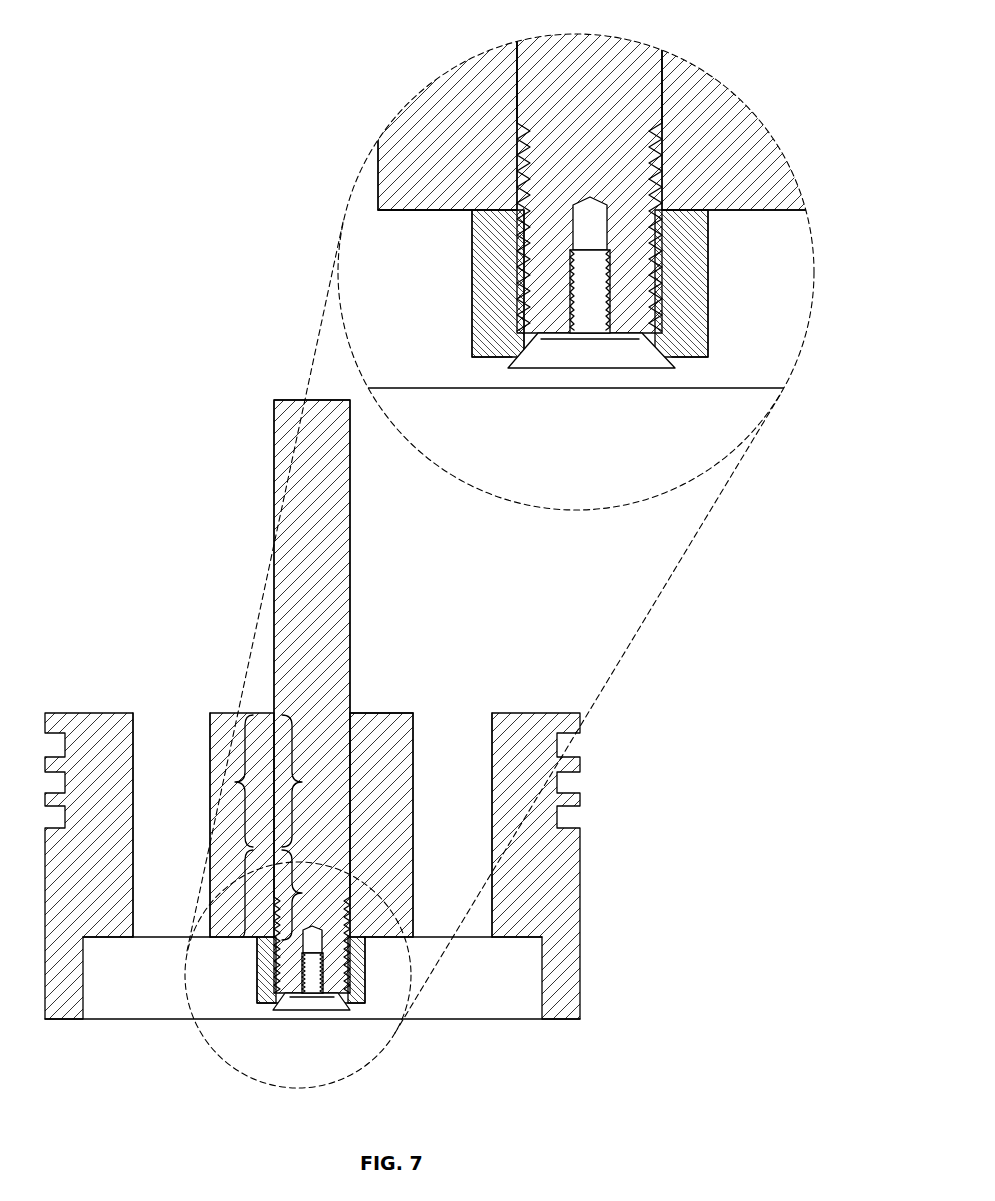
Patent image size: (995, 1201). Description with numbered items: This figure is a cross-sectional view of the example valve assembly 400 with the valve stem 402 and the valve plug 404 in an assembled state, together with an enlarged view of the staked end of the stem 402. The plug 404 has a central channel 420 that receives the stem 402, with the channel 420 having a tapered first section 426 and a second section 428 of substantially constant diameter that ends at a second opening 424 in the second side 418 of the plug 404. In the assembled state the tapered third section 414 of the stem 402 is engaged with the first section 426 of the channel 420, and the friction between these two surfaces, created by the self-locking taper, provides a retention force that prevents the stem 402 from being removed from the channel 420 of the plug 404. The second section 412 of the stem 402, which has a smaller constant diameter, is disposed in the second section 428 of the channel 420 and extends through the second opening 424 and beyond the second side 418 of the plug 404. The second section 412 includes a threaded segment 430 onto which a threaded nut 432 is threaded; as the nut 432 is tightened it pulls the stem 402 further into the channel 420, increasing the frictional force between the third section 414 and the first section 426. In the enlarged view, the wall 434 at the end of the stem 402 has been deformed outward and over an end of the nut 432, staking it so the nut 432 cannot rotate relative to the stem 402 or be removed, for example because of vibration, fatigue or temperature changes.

The valve assembly 400 is at (158, 465).
The valve stem 402 is at (615, 67).
The valve plug 404 is at (447, 105).
The second section 412 is at (255, 1013).
The third section 414 is at (235, 782).
The second side 418 is at (420, 211).
The central channel 420 is at (668, 97).
The second opening 424 is at (520, 213).
The first section 426 is at (311, 781).
The second section 428 is at (311, 895).
The threaded segment 430 is at (525, 240).
The threaded nut 432 is at (487, 315).
The wall 434 is at (513, 359).